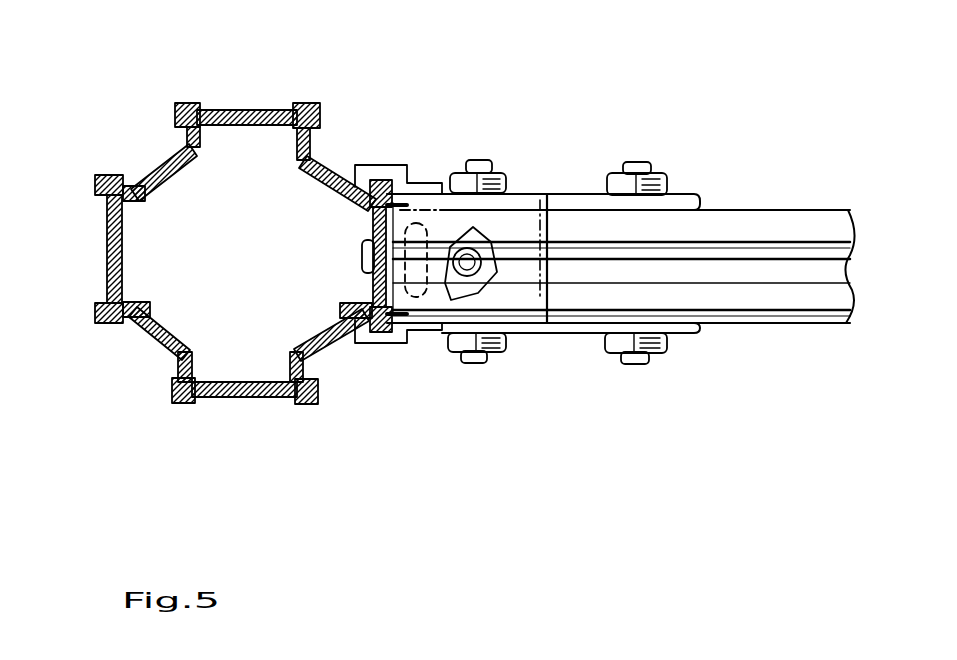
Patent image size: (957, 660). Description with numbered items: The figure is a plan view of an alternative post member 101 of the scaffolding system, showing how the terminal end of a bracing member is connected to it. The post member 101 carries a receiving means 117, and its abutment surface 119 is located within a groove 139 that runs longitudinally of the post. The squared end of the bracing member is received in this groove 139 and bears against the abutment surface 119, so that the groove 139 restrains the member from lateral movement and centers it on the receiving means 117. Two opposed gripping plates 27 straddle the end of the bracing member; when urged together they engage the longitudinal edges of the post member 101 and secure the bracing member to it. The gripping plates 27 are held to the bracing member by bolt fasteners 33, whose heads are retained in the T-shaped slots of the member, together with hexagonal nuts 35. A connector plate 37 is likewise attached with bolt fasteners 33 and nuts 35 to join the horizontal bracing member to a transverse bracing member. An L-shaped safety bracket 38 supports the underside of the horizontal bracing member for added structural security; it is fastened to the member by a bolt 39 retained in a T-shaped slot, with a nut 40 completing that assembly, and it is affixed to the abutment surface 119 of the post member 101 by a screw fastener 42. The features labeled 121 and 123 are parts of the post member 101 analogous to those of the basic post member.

The post member 101 is at (301, 440).
The receiving means 117 is at (237, 127).
The abutment surface 119 is at (106, 248).
The corner blocks 121 is at (172, 107).
The diagonal arms 123 is at (134, 197).
The groove 139 is at (198, 110).
The gripping plates 27 is at (546, 188).
The bolt fasteners 33 is at (484, 160).
The hexagonal nuts 35 is at (588, 168).
The connector plate 37 is at (700, 196).
The L-shaped safety bracket 38 is at (448, 185).
The bolt 39 is at (540, 300).
The nut 40 is at (455, 285).
The screw fastener 42 is at (418, 215).